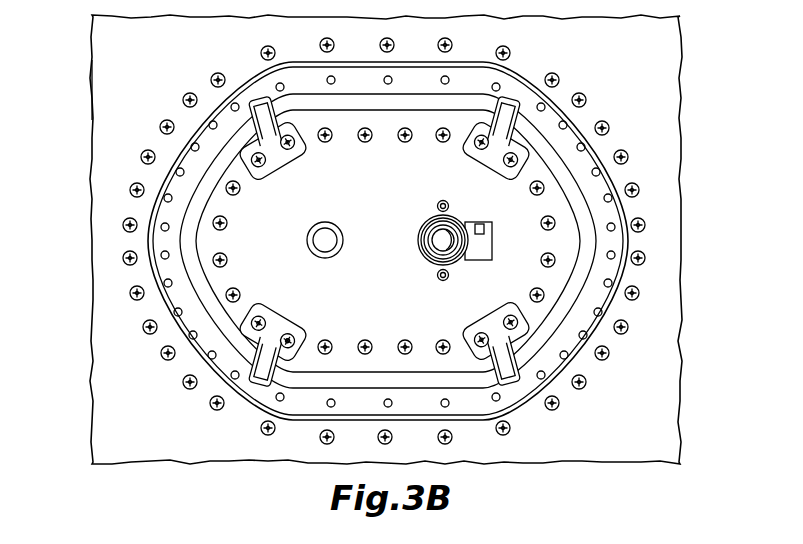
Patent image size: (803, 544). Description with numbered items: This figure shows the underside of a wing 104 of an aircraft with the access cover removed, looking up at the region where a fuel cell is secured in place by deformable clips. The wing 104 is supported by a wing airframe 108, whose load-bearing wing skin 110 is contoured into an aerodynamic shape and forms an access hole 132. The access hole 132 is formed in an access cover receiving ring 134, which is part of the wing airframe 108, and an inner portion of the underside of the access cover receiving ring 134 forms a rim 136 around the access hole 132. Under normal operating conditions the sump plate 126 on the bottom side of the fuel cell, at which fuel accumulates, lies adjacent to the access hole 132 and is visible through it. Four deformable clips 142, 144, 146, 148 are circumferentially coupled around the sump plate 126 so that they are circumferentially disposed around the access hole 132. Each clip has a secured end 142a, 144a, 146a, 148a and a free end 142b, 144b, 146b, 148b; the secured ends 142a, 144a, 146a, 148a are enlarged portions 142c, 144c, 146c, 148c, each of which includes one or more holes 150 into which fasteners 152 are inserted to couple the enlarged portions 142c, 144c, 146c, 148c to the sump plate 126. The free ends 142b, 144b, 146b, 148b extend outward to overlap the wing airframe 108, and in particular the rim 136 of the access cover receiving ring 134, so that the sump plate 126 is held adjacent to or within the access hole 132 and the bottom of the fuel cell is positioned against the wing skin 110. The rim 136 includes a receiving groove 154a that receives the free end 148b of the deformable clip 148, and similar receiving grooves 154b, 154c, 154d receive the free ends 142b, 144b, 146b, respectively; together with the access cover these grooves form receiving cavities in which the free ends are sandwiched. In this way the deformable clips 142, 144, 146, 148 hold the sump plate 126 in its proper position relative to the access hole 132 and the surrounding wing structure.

The wing 104 is at (93, 88).
The wing airframe 108 is at (650, 198).
The wing skin 110 is at (663, 78).
The sump plate 126 is at (404, 249).
The access hole 132 is at (178, 230).
The access cover receiving ring 134 is at (178, 160).
The rim 136 is at (350, 241).
The deformable clip 142 is at (262, 133).
The secured end 142a is at (281, 156).
The free end 142b is at (258, 100).
The enlarged portion 142c is at (322, 167).
The deformable clip 144 is at (503, 143).
The secured end 144a is at (492, 155).
The free end 144b is at (512, 100).
The enlarged portion 144c is at (451, 167).
The deformable clip 146 is at (508, 343).
The secured end 146a is at (492, 327).
The free end 146b is at (513, 383).
The enlarged portion 146c is at (450, 325).
The deformable clip 148 is at (265, 345).
The secured end 148a is at (278, 327).
The free end 148b is at (262, 390).
The enlarged portion 148c is at (321, 325).
The hole 150 is at (333, 404).
The fastener 152 is at (298, 338).
The receiving groove 154a is at (272, 387).
The receiving groove 154b is at (271, 148).
The receiving groove 154c is at (502, 105).
The receiving groove 154d is at (513, 390).